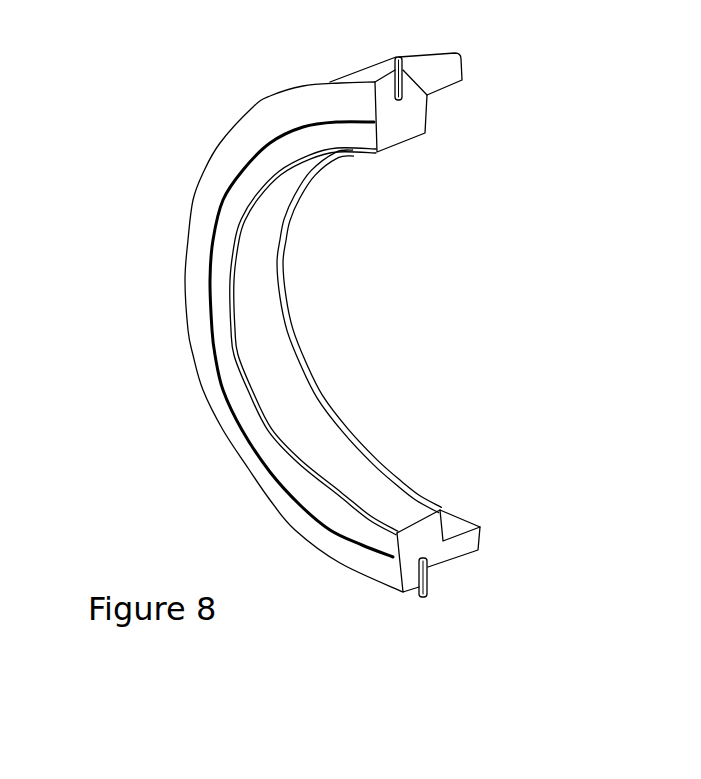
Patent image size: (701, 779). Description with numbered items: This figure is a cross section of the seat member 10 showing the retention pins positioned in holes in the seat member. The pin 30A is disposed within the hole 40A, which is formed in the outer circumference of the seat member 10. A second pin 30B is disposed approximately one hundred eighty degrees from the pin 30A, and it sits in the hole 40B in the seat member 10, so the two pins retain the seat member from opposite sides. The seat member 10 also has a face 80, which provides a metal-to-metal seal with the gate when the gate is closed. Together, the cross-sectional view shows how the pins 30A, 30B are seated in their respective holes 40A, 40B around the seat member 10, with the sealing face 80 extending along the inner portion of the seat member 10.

The seat member 10 is at (275, 287).
The face 80 is at (223, 357).
The pin 30A is at (400, 57).
The pin 30B is at (421, 597).
The hole 40A is at (408, 88).
The hole 40B is at (428, 567).